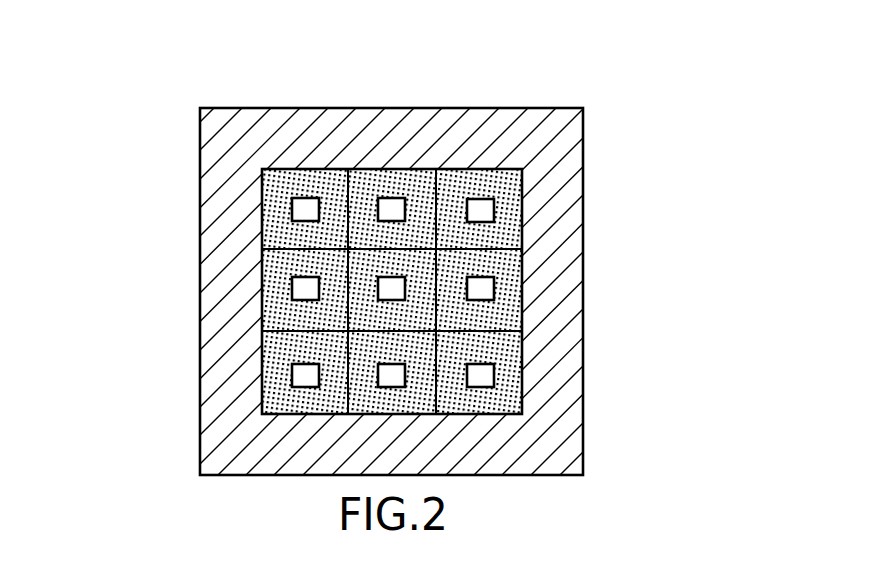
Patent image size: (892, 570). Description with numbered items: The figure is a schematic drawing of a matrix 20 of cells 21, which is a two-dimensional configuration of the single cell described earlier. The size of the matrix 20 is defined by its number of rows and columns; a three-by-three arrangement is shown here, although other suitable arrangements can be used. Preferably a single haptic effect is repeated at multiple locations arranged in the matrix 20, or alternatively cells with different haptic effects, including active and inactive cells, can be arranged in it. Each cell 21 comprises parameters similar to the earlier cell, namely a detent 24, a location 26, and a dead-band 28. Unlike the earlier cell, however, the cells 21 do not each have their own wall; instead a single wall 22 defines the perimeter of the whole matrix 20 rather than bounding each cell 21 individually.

The matrix 20 is at (446, 252).
The cell 21 is at (330, 170).
The wall 22 is at (471, 140).
The detent 24 is at (273, 183).
The location 26 is at (294, 210).
The dead-band 28 is at (305, 198).